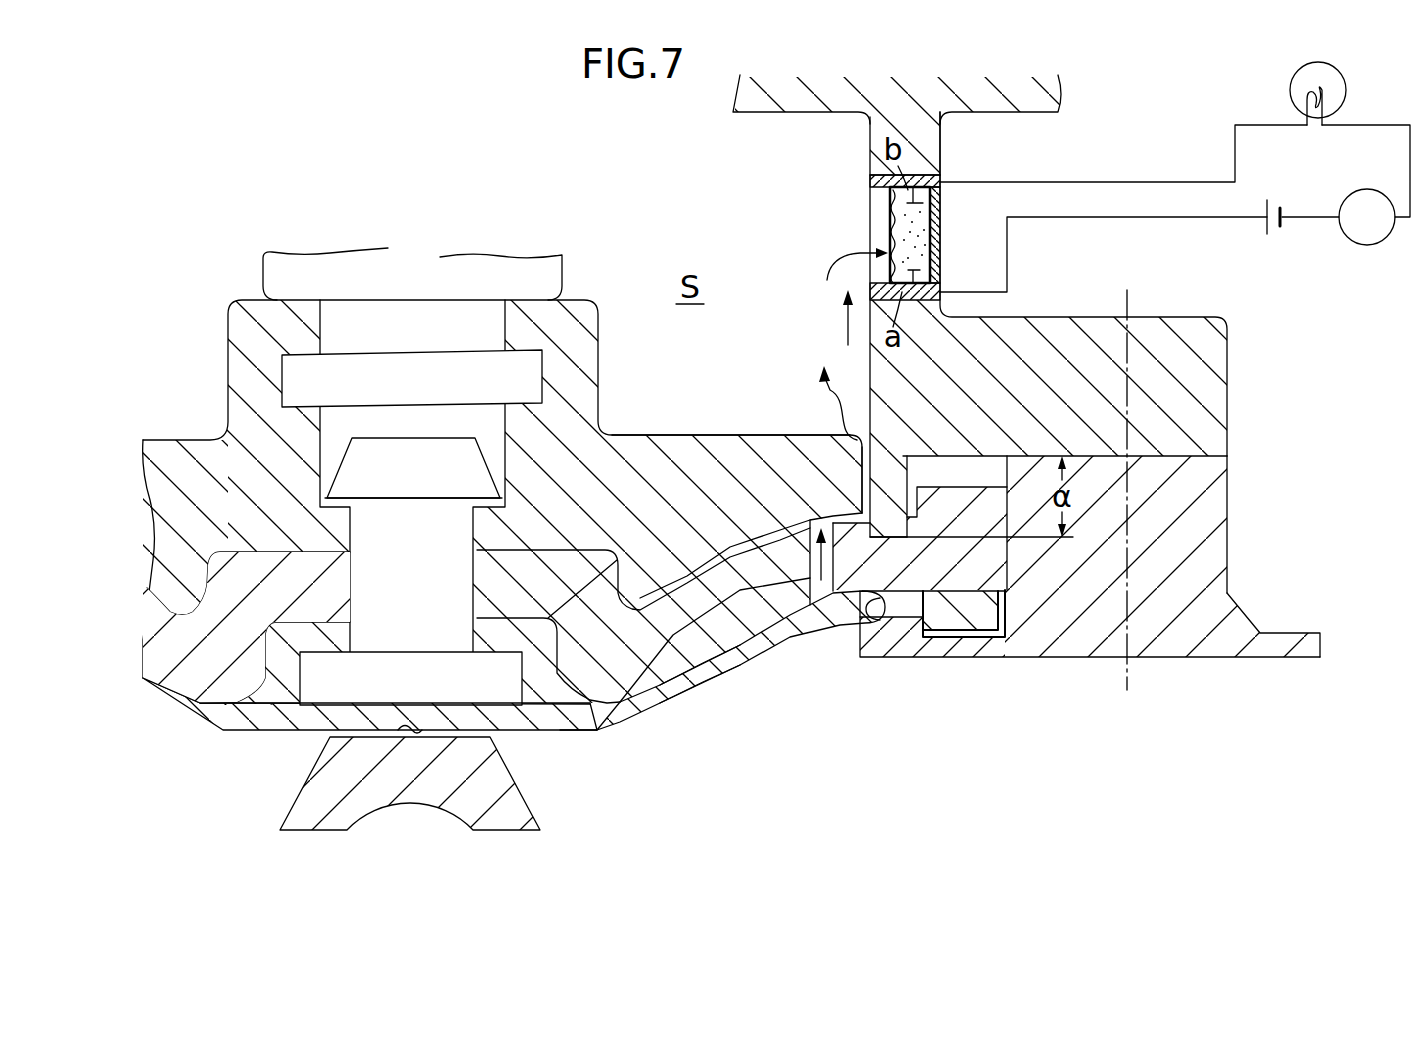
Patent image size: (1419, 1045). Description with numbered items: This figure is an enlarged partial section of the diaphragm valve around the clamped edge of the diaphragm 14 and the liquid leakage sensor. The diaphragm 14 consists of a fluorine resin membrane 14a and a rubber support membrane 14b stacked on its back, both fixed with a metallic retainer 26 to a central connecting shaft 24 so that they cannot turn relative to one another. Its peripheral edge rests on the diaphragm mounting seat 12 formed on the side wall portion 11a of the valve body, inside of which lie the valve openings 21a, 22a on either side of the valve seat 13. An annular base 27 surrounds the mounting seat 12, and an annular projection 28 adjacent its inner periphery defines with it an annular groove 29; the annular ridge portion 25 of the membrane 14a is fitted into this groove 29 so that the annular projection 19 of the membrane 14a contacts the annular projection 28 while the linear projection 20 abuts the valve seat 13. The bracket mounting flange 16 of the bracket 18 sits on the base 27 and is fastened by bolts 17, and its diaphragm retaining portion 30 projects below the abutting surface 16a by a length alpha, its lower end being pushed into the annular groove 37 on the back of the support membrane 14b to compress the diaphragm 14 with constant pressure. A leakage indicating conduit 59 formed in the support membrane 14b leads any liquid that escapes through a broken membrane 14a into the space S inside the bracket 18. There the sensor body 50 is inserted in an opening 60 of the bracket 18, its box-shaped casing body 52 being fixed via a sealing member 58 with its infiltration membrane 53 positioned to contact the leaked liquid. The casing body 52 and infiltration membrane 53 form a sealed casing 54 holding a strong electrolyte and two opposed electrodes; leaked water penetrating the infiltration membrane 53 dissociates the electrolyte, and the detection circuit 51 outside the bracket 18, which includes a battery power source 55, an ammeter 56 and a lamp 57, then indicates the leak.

The side wall portion 11a is at (1293, 640).
The diaphragm mounting seat 12 is at (973, 647).
The valve seat 13 is at (363, 690).
The diaphragm 14 is at (661, 740).
The membrane 14a is at (747, 668).
The support membrane 14b is at (703, 700).
The bracket mounting flange 16 is at (1177, 397).
The abutting surface 16a is at (1227, 470).
The bolts 17 is at (1128, 633).
The bracket 18 is at (882, 138).
The annular projection 19 is at (862, 613).
The linear projection 20 is at (413, 736).
The valve opening 21a is at (600, 737).
The valve opening 22a is at (223, 737).
The connecting shaft 24 is at (373, 573).
The annular ridge portion 25 is at (977, 613).
The retainer 26 is at (643, 453).
The annular base 27 is at (1190, 530).
The annular projection 28 is at (870, 642).
The annular groove 29 is at (930, 640).
The diaphragm retaining portion 30 is at (878, 477).
The annular groove 37 is at (903, 530).
The sensor body 50 is at (878, 203).
The detection circuit 51 is at (1156, 167).
The casing body 52 is at (933, 223).
The infiltration membrane 53 is at (887, 227).
The sealed casing 54 is at (930, 258).
The power source 55 is at (1276, 237).
The ammeter 56 is at (1372, 246).
The lamp 57 is at (1346, 94).
The sealing member 58 is at (877, 177).
The leakage indicating conduit 59 is at (807, 577).
The opening 60 is at (920, 170).